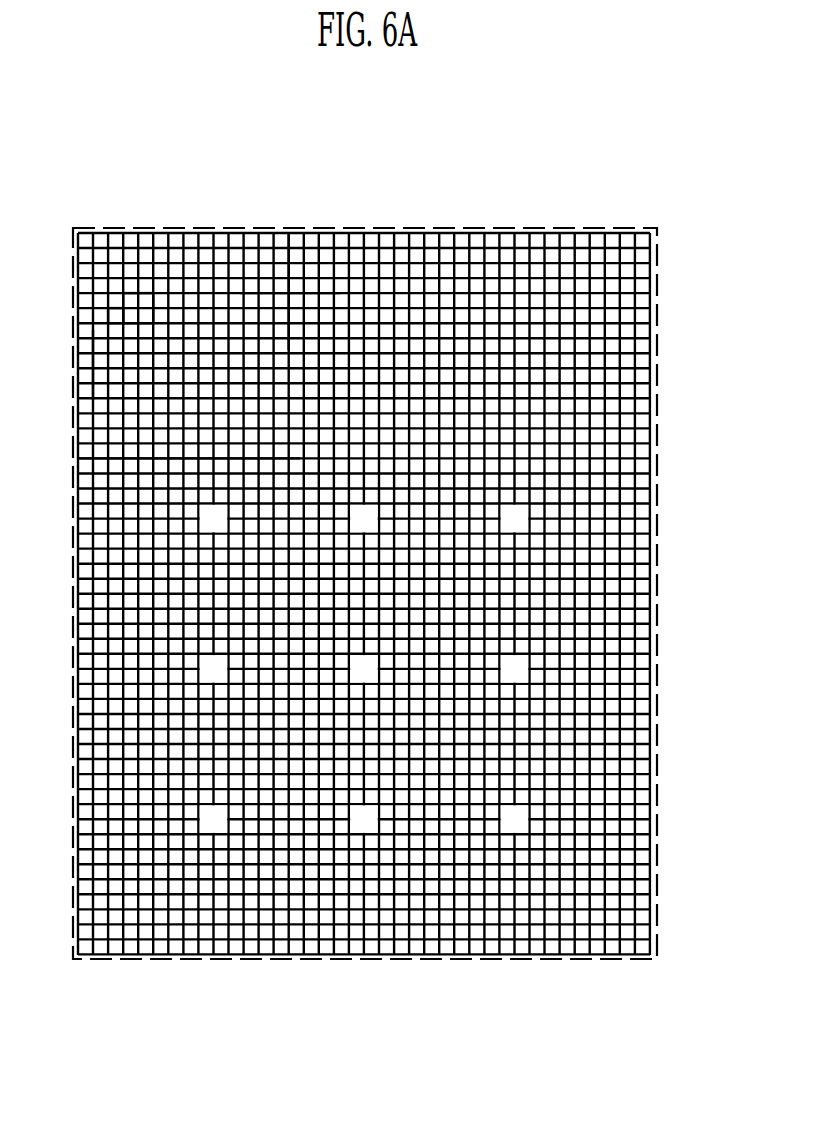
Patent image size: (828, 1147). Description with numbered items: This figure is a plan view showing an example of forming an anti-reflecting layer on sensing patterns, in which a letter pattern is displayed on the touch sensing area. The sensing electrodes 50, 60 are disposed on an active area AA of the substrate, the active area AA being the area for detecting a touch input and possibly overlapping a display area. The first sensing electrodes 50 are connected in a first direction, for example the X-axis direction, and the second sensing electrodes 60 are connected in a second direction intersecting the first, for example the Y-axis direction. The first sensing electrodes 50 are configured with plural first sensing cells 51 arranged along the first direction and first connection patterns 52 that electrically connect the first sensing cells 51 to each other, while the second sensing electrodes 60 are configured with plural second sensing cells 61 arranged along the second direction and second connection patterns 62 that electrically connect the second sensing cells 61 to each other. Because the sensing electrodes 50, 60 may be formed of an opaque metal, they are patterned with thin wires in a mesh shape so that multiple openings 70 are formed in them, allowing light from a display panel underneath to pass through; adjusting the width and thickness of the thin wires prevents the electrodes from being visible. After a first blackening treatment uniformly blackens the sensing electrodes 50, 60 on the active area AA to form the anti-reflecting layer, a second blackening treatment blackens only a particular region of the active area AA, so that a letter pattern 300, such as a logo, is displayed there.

The first sensing electrodes 50 is at (140, 438).
The first sensing cells 51 is at (157, 461).
The first connection patterns 52 is at (285, 292).
The second sensing electrodes 60 is at (134, 287).
The second sensing cells 61 is at (113, 318).
The second connection patterns 62 is at (284, 290).
The openings 70 is at (90, 358).
The letter pattern 300 is at (625, 365).
The active area AA is at (486, 196).